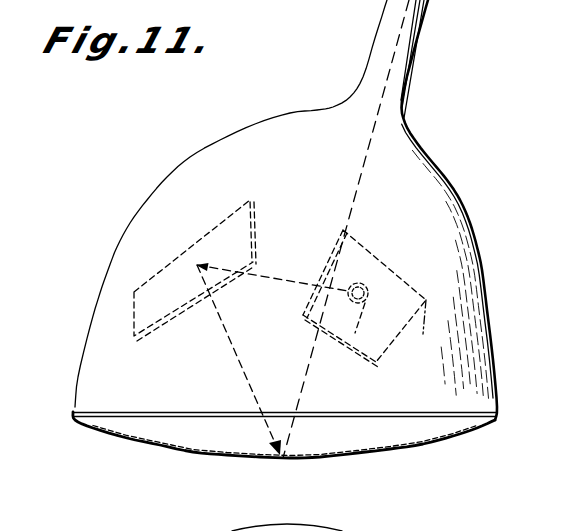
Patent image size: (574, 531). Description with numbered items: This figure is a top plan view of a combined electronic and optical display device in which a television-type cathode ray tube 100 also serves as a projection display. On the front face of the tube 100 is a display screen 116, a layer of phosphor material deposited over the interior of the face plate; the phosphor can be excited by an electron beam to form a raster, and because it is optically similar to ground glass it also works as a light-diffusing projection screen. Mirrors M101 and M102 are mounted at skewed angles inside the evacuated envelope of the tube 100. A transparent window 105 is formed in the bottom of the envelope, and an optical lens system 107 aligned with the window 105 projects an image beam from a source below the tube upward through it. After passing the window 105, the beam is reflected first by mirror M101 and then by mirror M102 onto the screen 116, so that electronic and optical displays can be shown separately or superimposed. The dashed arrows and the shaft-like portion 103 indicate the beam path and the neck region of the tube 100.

The cathode ray tube 100 is at (114, 250).
The shaft 103 is at (412, 54).
The mirror M102 is at (243, 203).
The mirror M101 is at (368, 250).
The optical lens system 107 is at (366, 286).
The transparent window 105 is at (340, 355).
The display screen 116 is at (175, 448).